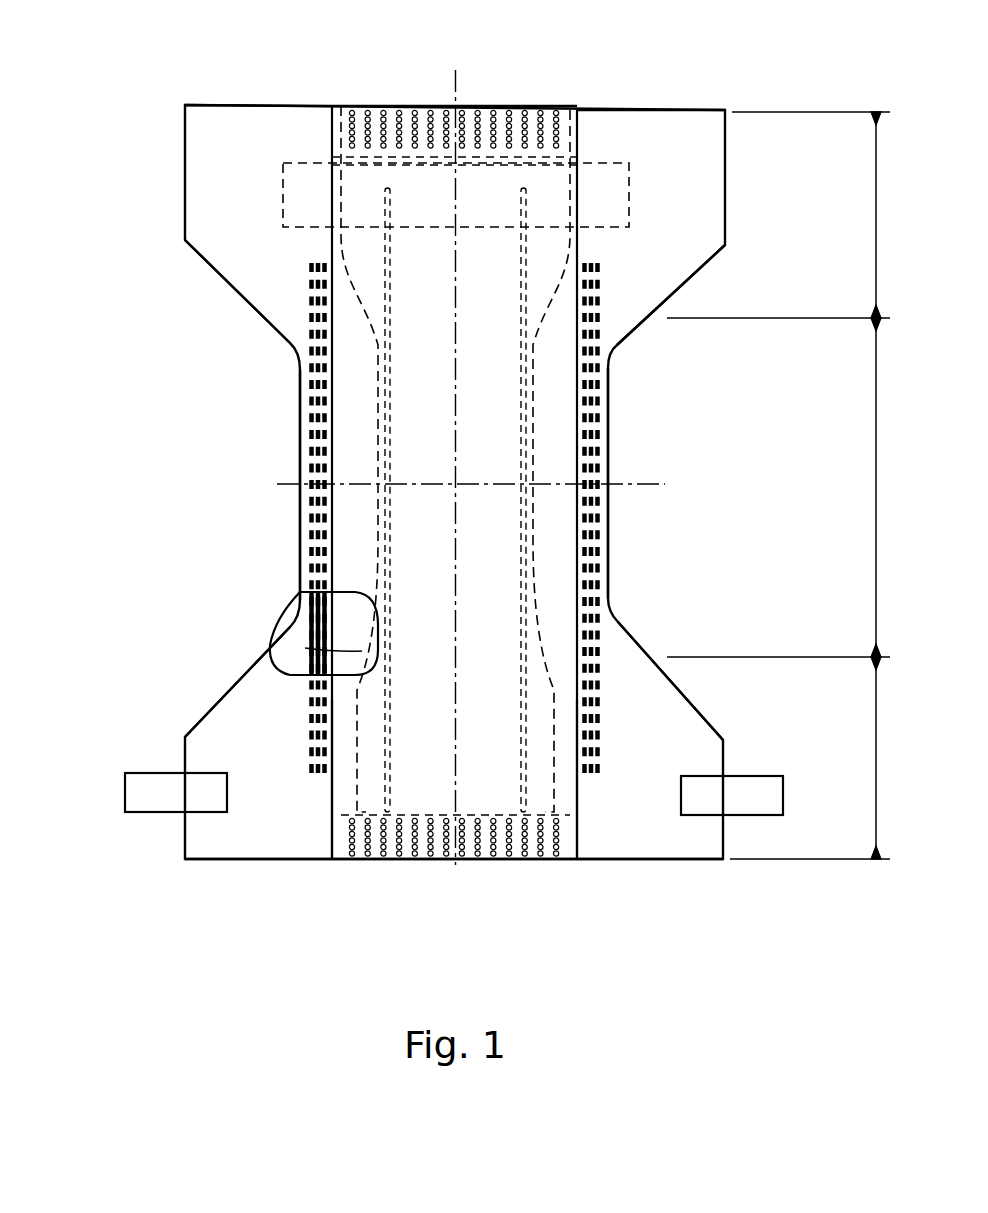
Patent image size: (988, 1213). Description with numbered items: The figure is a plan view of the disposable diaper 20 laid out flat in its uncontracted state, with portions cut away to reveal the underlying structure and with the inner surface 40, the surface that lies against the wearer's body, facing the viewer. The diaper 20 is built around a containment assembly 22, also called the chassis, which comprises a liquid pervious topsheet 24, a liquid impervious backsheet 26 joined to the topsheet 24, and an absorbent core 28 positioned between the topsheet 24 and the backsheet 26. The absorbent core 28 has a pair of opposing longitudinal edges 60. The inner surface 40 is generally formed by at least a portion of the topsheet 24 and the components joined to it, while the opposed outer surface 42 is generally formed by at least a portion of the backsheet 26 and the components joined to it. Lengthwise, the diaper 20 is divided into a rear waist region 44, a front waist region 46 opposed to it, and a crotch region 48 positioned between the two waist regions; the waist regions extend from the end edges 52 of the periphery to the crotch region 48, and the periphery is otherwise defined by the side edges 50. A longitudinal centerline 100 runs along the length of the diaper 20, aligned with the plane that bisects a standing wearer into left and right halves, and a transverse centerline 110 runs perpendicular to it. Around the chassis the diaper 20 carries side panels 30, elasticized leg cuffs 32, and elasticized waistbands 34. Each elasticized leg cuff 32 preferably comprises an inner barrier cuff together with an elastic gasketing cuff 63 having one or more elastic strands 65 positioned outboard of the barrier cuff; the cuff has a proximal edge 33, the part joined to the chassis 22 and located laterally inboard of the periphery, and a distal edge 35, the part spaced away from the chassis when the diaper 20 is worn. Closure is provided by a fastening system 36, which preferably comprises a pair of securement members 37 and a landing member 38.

The diaper 20 is at (153, 100).
The containment assembly 22 is at (414, 272).
The topsheet 24 is at (483, 370).
The backsheet 26 is at (282, 653).
The absorbent core 28 is at (300, 592).
The side panels 30 is at (244, 135).
The elasticized leg cuffs 32 is at (560, 678).
The proximal edge 33 is at (330, 802).
The elasticized waistbands 34 is at (545, 112).
The distal edge 35 is at (397, 780).
The fastening system 36 is at (133, 828).
The securement members 37 is at (163, 805).
The landing member 38 is at (629, 190).
The inner surface 40 is at (480, 465).
The outer surface 42 is at (300, 448).
The rear waist region 44 is at (876, 740).
The front waist region 46 is at (876, 215).
The crotch region 48 is at (876, 490).
The side edges 50 is at (300, 393).
The end edges 52 is at (420, 106).
The longitudinal edges 60 is at (367, 623).
The elastic gasketing cuff 63 is at (598, 577).
The elastic strands 65 is at (310, 622).
The longitudinal centerline 100 is at (457, 75).
The transverse centerline 110 is at (668, 485).